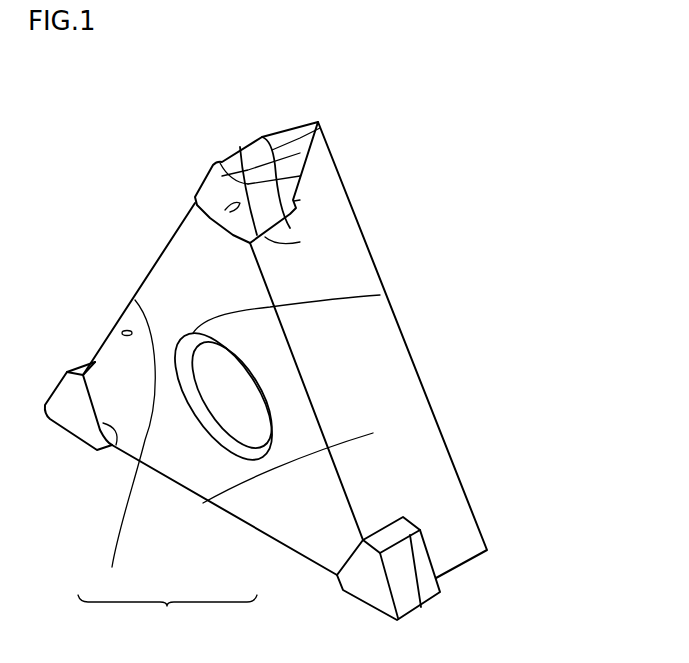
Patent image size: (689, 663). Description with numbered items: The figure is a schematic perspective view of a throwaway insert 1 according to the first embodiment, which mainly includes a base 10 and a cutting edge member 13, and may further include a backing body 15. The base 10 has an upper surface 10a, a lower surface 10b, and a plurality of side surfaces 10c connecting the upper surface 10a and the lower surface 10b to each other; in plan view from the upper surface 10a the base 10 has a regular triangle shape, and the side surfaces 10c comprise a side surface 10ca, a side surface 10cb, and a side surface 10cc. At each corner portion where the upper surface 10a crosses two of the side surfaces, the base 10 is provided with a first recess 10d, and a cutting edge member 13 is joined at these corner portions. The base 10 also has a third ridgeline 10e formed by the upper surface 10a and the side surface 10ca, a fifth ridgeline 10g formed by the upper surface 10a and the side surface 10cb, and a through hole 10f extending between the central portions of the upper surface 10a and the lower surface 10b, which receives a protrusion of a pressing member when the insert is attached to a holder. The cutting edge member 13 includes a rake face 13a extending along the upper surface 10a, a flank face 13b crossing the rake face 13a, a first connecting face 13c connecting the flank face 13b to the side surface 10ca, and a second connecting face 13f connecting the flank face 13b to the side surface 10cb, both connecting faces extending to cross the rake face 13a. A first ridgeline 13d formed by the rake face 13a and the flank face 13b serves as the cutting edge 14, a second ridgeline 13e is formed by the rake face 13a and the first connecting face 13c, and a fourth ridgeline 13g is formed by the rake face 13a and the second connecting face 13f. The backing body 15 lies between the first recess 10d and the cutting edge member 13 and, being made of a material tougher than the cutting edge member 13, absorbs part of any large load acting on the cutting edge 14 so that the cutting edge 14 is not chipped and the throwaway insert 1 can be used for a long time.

The throwaway insert 1 is at (463, 66).
The base 10 is at (312, 537).
The upper surface 10a is at (315, 508).
The lower surface 10b is at (437, 433).
The side surfaces 10c is at (167, 615).
The side surface 10ca is at (203, 503).
The side surface 10cb is at (117, 446).
The side surface 10cc is at (243, 520).
The first recess 10d is at (393, 518).
The third ridgeline 10e is at (352, 510).
The through hole 10f is at (380, 295).
The fifth ridgeline 10g is at (124, 333).
The cutting edge member 13 is at (193, 197).
The rake face 13a is at (320, 128).
The flank face 13b is at (300, 153).
The first connecting face 13c is at (300, 242).
The first ridgeline 13d is at (300, 176).
The second ridgeline 13e is at (300, 200).
The second connecting face 13f is at (193, 200).
The fourth ridgeline 13g is at (197, 213).
The cutting edge 14 is at (210, 177).
The backing body 15 is at (262, 155).